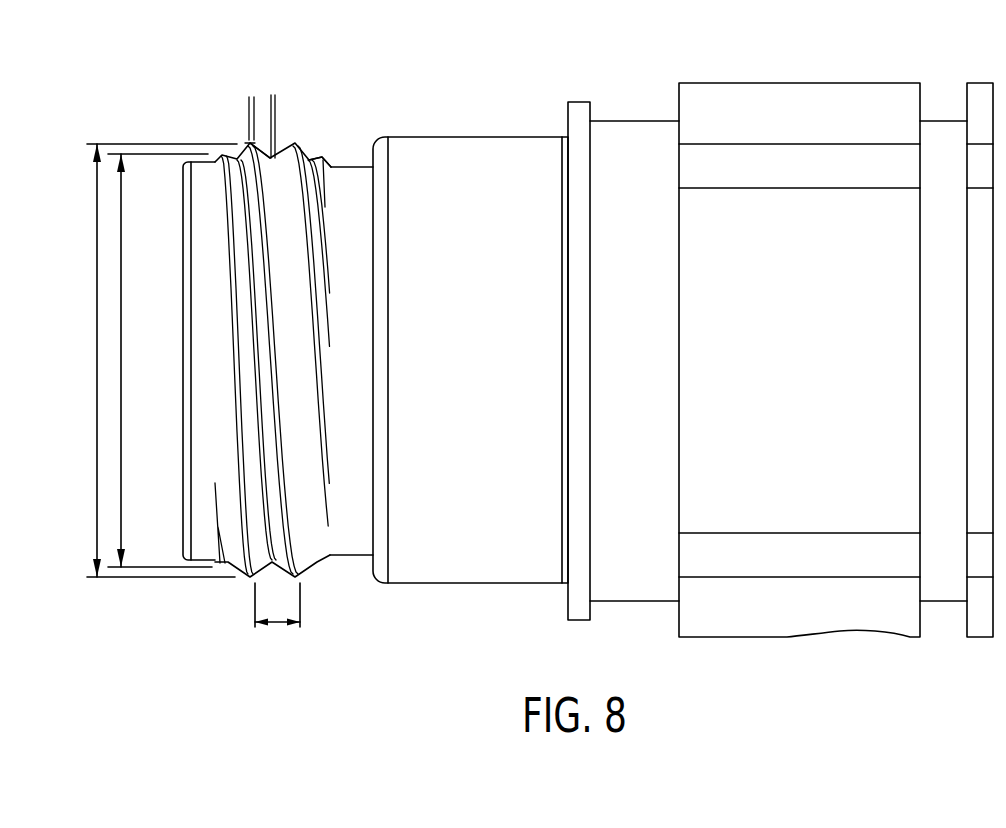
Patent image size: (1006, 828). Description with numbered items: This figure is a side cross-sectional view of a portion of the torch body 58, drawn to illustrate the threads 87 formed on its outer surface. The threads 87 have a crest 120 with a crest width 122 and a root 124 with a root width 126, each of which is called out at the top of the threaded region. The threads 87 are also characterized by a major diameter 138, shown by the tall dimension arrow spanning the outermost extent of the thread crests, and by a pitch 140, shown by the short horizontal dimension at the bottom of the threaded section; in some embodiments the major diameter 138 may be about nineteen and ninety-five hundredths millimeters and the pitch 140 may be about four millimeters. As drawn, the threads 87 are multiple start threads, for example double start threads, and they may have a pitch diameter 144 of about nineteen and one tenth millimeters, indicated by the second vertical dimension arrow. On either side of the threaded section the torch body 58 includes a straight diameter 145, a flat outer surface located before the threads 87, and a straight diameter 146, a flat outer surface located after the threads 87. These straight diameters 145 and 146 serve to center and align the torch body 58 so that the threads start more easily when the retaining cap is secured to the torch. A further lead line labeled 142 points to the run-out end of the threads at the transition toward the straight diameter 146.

The torch body 58 is at (815, 23).
The threads 87 is at (324, 593).
The crest 120 is at (248, 120).
The width 122 is at (253, 95).
The root 124 is at (263, 178).
The width 126 is at (274, 95).
The major diameter 138 is at (96, 373).
The pitch 140 is at (278, 623).
The thread run-out 142 is at (303, 164).
The pitch diameter 144 is at (123, 323).
The straight diameter 145 is at (200, 158).
The straight diameter 146 is at (474, 137).